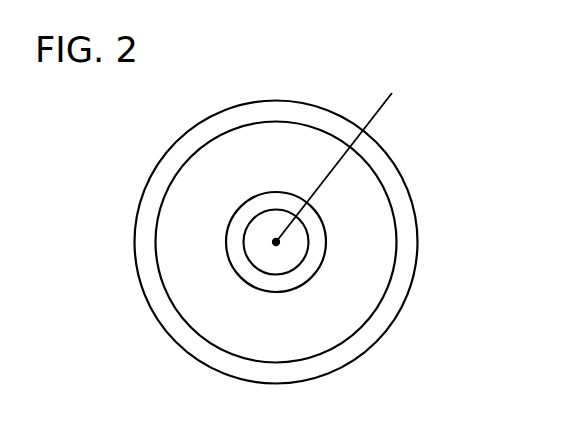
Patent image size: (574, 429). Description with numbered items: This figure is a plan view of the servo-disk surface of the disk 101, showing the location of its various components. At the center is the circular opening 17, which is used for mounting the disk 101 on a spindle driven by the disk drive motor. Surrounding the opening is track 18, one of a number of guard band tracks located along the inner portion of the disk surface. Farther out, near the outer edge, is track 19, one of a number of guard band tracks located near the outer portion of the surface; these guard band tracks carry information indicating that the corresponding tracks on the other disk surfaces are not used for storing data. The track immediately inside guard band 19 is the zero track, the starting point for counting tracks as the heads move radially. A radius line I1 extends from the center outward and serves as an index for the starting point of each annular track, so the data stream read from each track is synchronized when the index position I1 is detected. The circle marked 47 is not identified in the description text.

The disk 101 is at (432, 184).
The inner wall of outer annulus 47 is at (181, 288).
The guard band track 19 is at (153, 255).
The guard band track 18 is at (229, 210).
The circular opening 17 is at (258, 233).
The radius line I1 is at (373, 112).